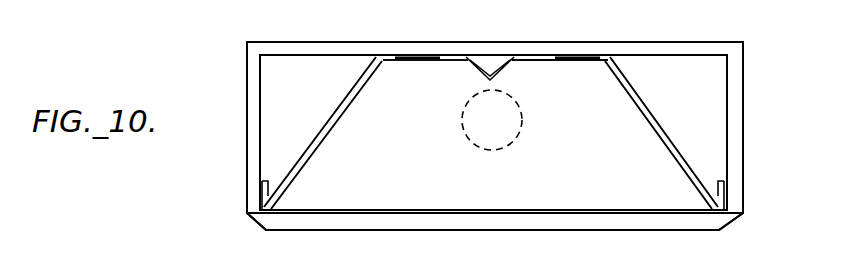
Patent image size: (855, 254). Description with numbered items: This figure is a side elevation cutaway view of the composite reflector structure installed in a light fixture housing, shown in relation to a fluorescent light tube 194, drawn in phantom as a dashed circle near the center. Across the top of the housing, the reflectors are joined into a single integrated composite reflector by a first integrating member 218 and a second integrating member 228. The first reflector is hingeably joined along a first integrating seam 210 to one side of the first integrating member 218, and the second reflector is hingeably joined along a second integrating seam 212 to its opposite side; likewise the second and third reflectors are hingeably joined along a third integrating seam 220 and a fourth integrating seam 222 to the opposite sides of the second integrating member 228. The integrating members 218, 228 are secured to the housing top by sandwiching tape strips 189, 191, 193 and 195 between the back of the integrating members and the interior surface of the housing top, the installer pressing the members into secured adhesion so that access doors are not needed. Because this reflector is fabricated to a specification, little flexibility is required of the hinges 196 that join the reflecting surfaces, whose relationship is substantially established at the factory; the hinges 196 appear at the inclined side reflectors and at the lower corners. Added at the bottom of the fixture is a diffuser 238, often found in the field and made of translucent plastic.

The tape strip 189 is at (262, 181).
The tape strip 191 is at (371, 58).
The tape strip 193 is at (614, 58).
The fluorescent light tube 194 is at (507, 146).
The tape strip 195 is at (723, 181).
The hinges 196 is at (321, 118).
The first integrating seam 210 is at (383, 64).
The second integrating seam 212 is at (467, 69).
The first integrating member 218 is at (413, 58).
The third integrating seam 220 is at (516, 65).
The fourth integrating seam 222 is at (606, 62).
The second integrating member 228 is at (578, 60).
The diffuser 238 is at (730, 214).